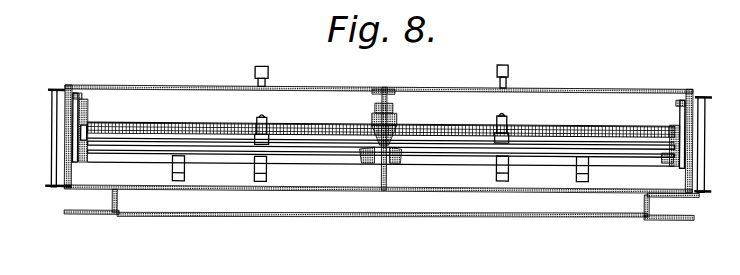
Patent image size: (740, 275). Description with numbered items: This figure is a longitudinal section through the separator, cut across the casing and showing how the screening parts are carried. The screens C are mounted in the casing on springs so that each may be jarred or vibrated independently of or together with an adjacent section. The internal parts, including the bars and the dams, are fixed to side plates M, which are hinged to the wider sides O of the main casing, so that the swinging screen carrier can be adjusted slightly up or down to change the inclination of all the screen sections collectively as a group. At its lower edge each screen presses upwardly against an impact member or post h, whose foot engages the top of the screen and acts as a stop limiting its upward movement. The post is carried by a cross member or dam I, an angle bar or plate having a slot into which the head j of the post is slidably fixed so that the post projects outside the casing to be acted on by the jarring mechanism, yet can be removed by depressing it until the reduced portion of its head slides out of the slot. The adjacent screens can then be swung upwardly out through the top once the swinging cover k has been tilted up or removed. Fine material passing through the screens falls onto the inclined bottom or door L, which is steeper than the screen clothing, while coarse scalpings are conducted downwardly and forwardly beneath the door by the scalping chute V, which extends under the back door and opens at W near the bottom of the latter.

The head of the post j is at (254, 70).
The swinging cover k is at (323, 83).
The impact member or post h is at (509, 72).
The cross member or dam I is at (378, 130).
The screens C is at (312, 138).
The wider sides of the main casing O is at (57, 163).
The side plates M is at (80, 162).
The opening of the scalping chute W is at (314, 162).
The bottom or back door L is at (518, 188).
The scalping chute V is at (283, 203).